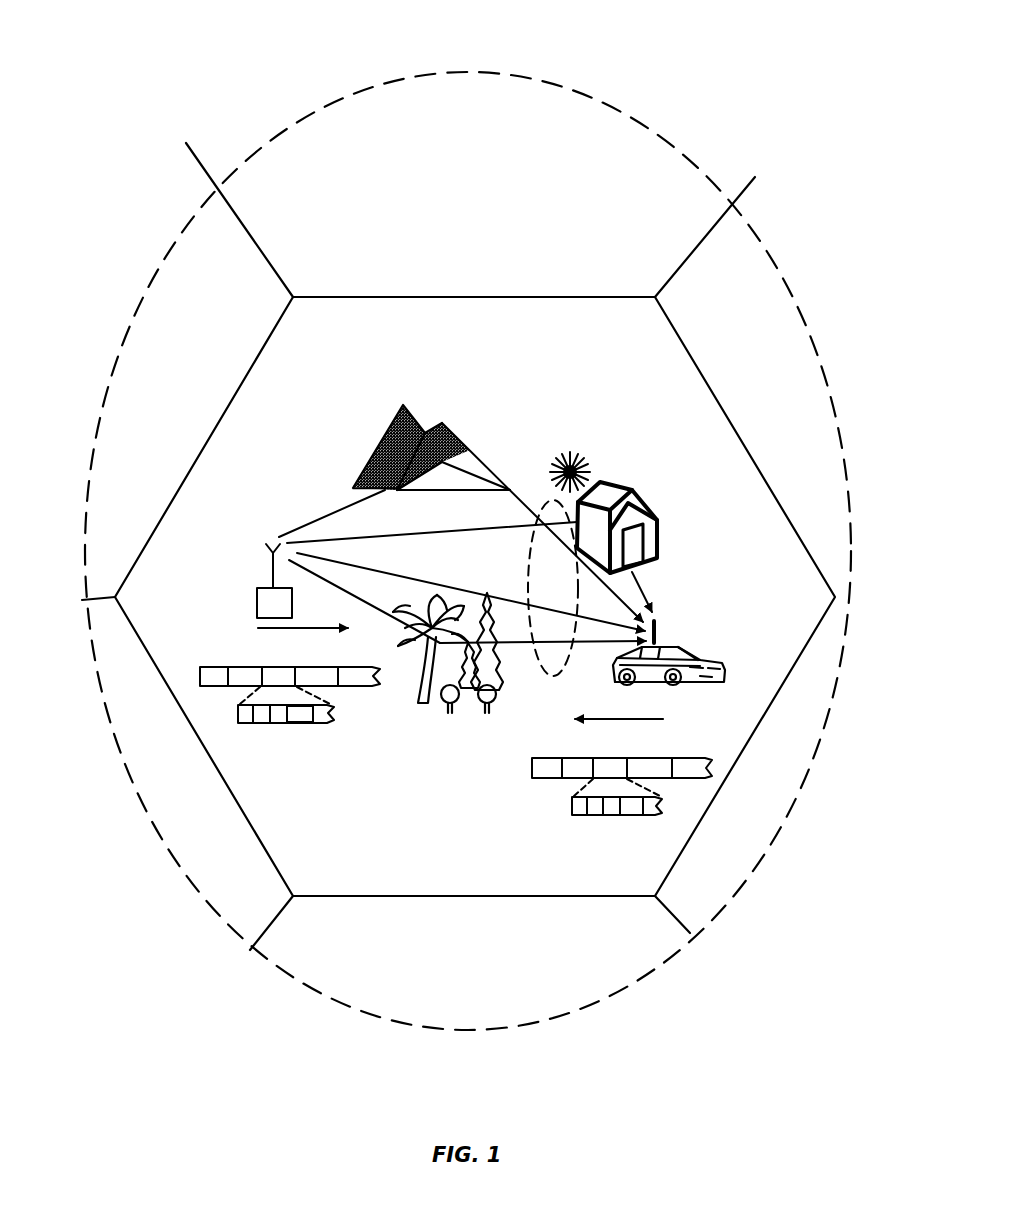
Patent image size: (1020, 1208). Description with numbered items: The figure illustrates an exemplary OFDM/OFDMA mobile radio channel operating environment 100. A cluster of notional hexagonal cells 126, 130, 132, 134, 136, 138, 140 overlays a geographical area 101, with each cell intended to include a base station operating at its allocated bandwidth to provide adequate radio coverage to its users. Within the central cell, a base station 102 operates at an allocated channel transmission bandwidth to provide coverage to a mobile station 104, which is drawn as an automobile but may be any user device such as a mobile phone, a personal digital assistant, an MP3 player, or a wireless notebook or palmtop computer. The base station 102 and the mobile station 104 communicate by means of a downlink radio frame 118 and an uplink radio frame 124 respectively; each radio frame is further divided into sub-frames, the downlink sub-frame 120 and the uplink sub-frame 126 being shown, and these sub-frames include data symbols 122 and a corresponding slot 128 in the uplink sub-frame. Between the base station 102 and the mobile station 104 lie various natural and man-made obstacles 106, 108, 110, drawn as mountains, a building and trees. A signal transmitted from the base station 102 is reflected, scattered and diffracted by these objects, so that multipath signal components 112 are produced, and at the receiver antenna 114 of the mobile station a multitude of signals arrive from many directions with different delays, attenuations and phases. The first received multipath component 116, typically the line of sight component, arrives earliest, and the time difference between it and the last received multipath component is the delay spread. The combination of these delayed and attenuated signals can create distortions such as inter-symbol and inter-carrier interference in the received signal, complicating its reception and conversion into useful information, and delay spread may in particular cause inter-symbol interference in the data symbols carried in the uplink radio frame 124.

The mobile radio channel operating environment 100 is at (226, 46).
The geographical area 101 is at (586, 95).
The base station 102 is at (262, 588).
The mobile station 104 is at (706, 661).
The obstacle 106 is at (374, 448).
The obstacle 108 is at (652, 512).
The obstacle 110 is at (420, 687).
The multipath signal components 112 is at (527, 584).
The receiver antenna 114 is at (658, 632).
The first received multipath component 116 is at (367, 568).
The downlink radio frame 118 is at (200, 678).
The sub-frame 120 is at (238, 714).
The data symbols 122 is at (300, 714).
The uplink radio frame 124 is at (695, 758).
The hexagonal cell / sub-frame 126 is at (260, 372).
The uplink sub-frame slot 128 is at (633, 808).
The hexagonal cell 130 is at (168, 252).
The hexagonal cell 132 is at (290, 138).
The hexagonal cell 134 is at (768, 278).
The hexagonal cell 136 is at (748, 877).
The hexagonal cell 138 is at (385, 1015).
The hexagonal cell 140 is at (188, 879).